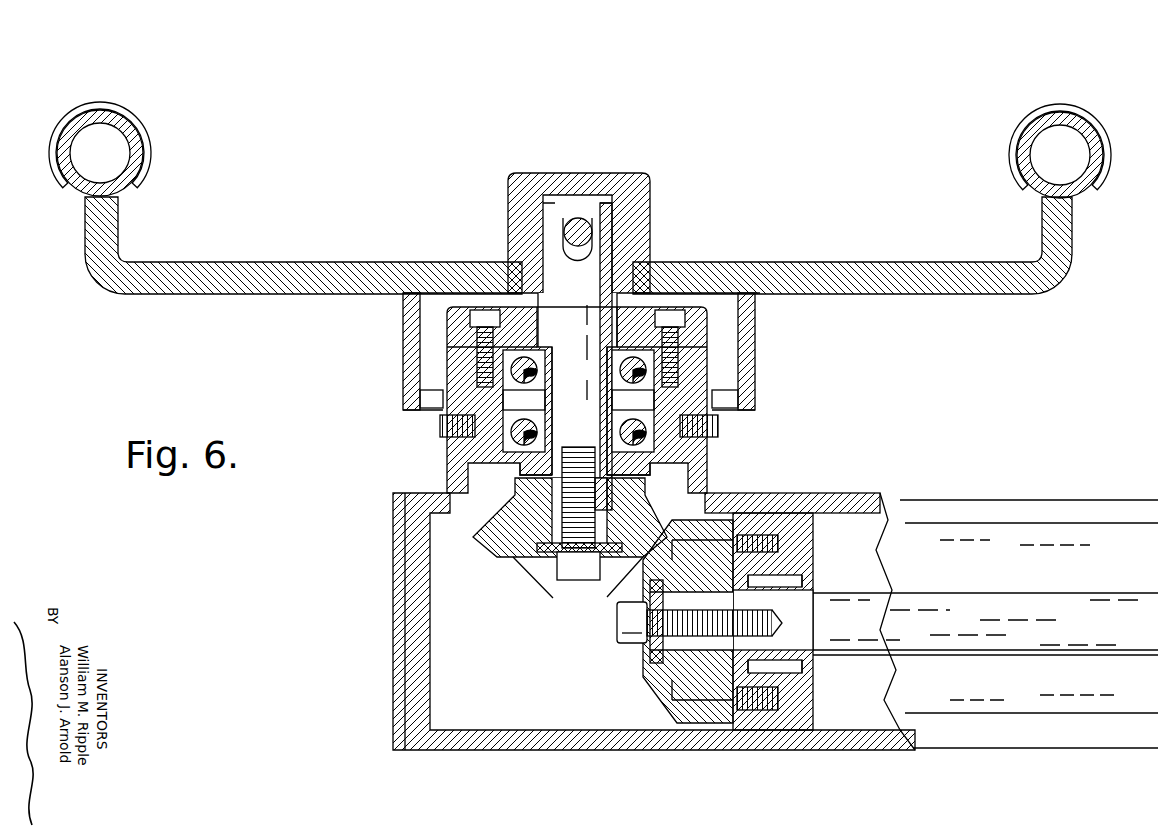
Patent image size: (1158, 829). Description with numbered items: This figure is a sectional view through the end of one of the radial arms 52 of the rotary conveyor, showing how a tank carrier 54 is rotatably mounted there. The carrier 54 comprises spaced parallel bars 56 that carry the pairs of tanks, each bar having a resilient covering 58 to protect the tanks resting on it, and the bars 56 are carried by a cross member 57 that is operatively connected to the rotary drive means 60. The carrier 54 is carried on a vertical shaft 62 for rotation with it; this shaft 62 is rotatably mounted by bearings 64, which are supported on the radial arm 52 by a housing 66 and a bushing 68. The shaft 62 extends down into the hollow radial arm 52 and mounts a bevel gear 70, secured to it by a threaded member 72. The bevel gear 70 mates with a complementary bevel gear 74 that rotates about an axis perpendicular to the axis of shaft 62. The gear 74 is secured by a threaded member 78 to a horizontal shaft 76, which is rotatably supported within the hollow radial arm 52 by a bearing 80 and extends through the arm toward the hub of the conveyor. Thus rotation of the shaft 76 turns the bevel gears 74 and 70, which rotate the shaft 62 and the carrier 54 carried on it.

The radial arm 52 is at (830, 497).
The carrier 54 is at (372, 247).
The spaced parallel bars 56 is at (145, 150).
The cross member 57 is at (732, 263).
The resilient covering 58 is at (1032, 120).
The rotary drive means 60 is at (525, 586).
The shaft 62 is at (612, 327).
The bearings 64 is at (537, 368).
The housing 66 is at (708, 457).
The bushing 68 is at (670, 466).
The bevel gear 70 is at (490, 548).
The threaded member 72 is at (572, 583).
The complementary bevel gear 74 is at (640, 686).
The shaft 76 is at (848, 590).
The threaded member 78 is at (616, 620).
The bearing 80 is at (818, 668).